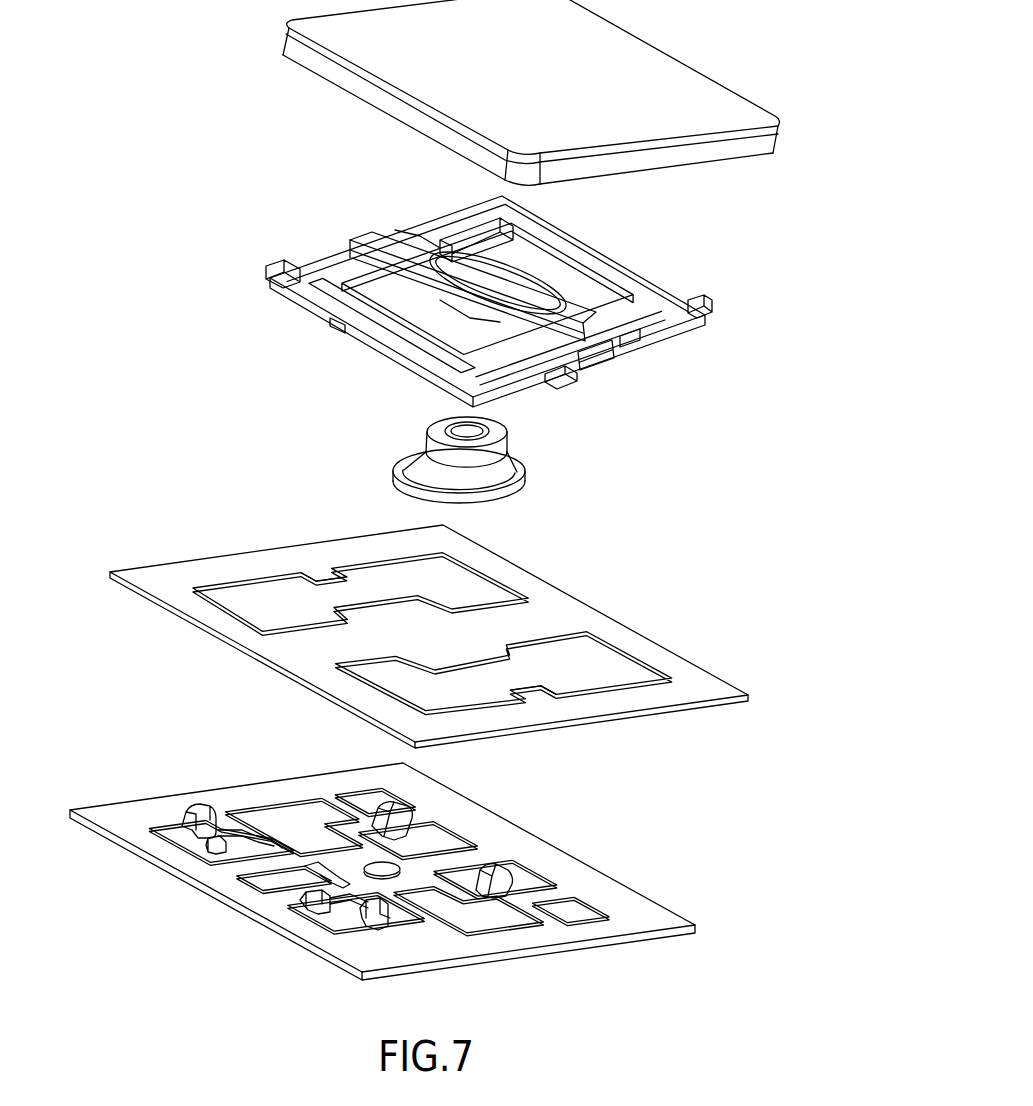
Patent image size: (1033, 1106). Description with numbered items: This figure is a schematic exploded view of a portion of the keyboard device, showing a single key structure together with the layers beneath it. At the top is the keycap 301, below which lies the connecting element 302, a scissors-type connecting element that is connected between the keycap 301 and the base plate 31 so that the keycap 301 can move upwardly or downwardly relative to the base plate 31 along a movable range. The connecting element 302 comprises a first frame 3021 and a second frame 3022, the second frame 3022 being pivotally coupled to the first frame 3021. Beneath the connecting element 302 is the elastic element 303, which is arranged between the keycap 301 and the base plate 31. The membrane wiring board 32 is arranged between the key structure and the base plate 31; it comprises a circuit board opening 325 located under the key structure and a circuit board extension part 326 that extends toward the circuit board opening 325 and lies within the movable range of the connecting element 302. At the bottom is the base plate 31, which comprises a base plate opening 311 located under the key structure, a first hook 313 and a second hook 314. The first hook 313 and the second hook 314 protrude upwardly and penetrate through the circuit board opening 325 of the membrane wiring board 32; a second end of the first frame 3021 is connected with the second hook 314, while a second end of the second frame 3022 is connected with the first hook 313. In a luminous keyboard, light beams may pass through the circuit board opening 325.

The keycap 301 is at (640, 58).
The connecting element 302 is at (489, 301).
The first frame 3021 is at (613, 332).
The second frame 3022 is at (413, 250).
The elastic element 303 is at (411, 409).
The membrane wiring board 32 is at (429, 633).
The circuit board opening 325 is at (417, 577).
The circuit board extension part 326 is at (322, 573).
The base plate 31 is at (382, 883).
The base plate opening 311 is at (293, 820).
The first hook 313 is at (397, 813).
The second hook 314 is at (203, 813).